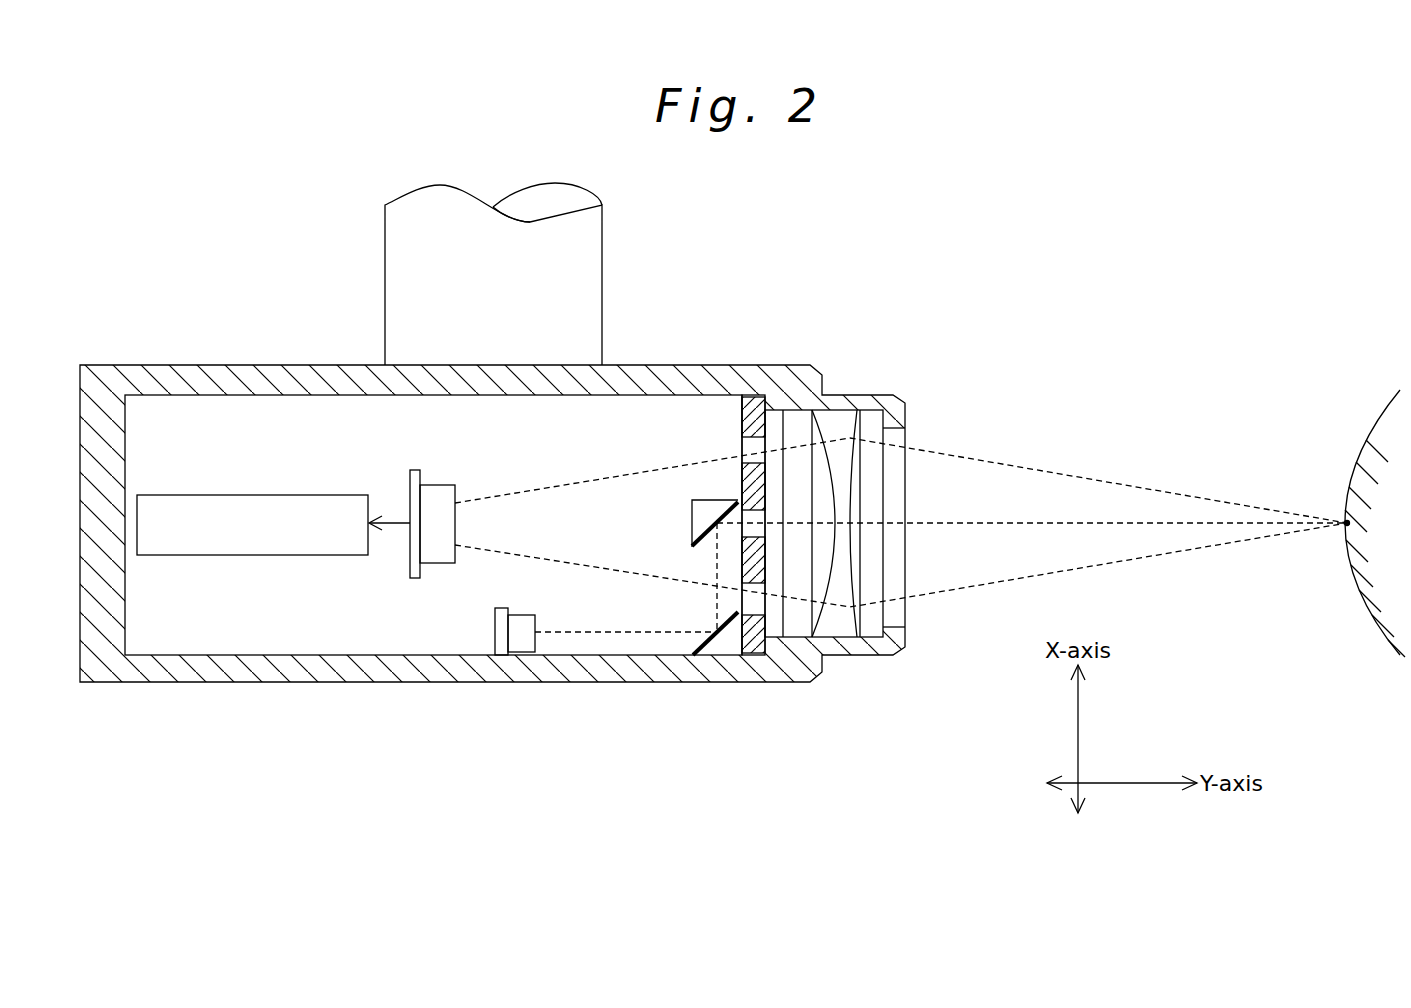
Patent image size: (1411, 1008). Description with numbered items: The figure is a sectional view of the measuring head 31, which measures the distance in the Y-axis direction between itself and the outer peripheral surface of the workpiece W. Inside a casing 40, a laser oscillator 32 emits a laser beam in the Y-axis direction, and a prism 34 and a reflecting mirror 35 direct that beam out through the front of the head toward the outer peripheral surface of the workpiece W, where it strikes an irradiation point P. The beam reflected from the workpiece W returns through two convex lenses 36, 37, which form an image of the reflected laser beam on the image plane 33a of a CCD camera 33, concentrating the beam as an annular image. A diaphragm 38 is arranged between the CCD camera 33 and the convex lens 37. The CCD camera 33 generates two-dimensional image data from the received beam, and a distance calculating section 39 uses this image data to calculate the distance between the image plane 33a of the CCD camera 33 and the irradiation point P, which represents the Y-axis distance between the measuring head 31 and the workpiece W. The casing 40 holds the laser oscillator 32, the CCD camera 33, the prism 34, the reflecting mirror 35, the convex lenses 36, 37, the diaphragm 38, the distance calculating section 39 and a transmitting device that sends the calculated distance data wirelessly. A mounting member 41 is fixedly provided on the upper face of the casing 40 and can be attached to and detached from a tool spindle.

The measuring head 31 is at (246, 194).
The laser oscillator 32 is at (522, 643).
The CCD camera 33 is at (432, 620).
The image plane 33a is at (437, 553).
The prism 34 is at (700, 642).
The reflecting mirror 35 is at (705, 530).
The convex lens 36 is at (878, 467).
The convex lens 37 is at (822, 578).
The diaphragm 38 is at (745, 397).
The distance calculating section 39 is at (252, 495).
The casing 40 is at (598, 672).
The mounting member 41 is at (395, 300).
The irradiation point P is at (1345, 521).
The workpiece W is at (1362, 600).